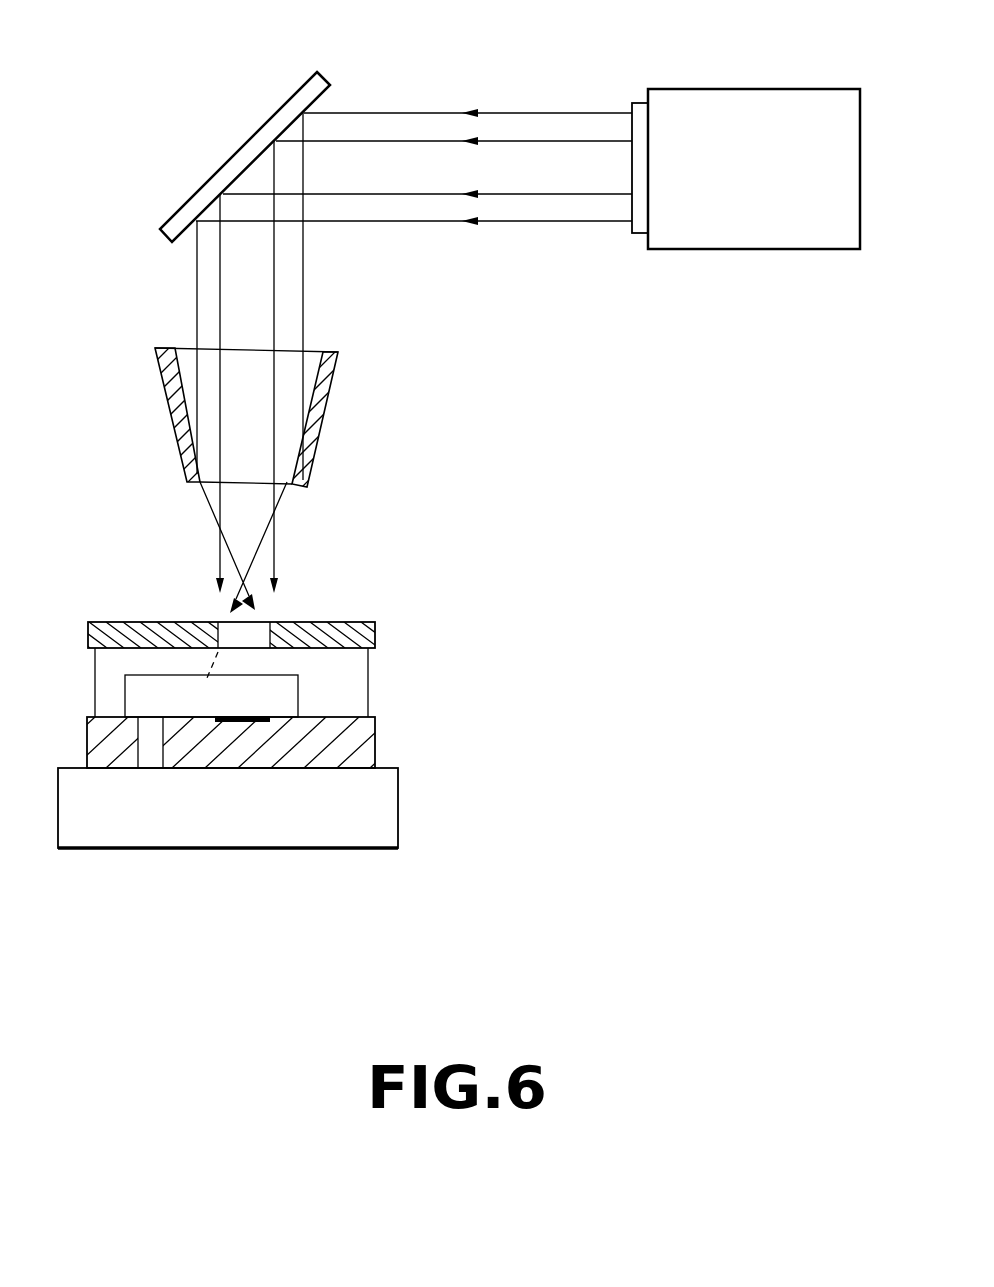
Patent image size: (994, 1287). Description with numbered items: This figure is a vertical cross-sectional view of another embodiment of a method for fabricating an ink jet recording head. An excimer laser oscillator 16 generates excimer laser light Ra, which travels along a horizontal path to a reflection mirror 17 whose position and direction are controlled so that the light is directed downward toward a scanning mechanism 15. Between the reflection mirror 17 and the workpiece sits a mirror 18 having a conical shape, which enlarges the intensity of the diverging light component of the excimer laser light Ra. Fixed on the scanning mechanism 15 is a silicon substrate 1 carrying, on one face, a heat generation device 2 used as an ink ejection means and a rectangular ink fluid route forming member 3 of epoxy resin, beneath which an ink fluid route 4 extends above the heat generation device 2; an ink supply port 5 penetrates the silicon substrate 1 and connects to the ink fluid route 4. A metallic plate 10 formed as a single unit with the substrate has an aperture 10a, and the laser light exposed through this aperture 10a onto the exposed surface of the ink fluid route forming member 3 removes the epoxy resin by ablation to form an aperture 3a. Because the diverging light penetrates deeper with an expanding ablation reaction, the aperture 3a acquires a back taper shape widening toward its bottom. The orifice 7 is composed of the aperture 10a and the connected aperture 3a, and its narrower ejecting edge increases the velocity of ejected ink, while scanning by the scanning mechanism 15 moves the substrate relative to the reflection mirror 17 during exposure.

The silicon substrate 1 is at (337, 757).
The heat generation device 2 is at (235, 723).
The ink fluid route forming member 3 is at (368, 678).
The aperture 3a is at (272, 665).
The ink fluid route 4 is at (292, 700).
The ink supply port 5 is at (152, 760).
The orifice 7 is at (377, 538).
The metallic plate 10 is at (375, 638).
The aperture of the metallic plate 10a is at (272, 634).
The scanning mechanism 15 is at (387, 823).
The excimer laser oscillator 16 is at (762, 92).
The reflection mirror 17 is at (283, 115).
The mirror 18 is at (172, 409).
The excimer laser light Ra is at (303, 297).